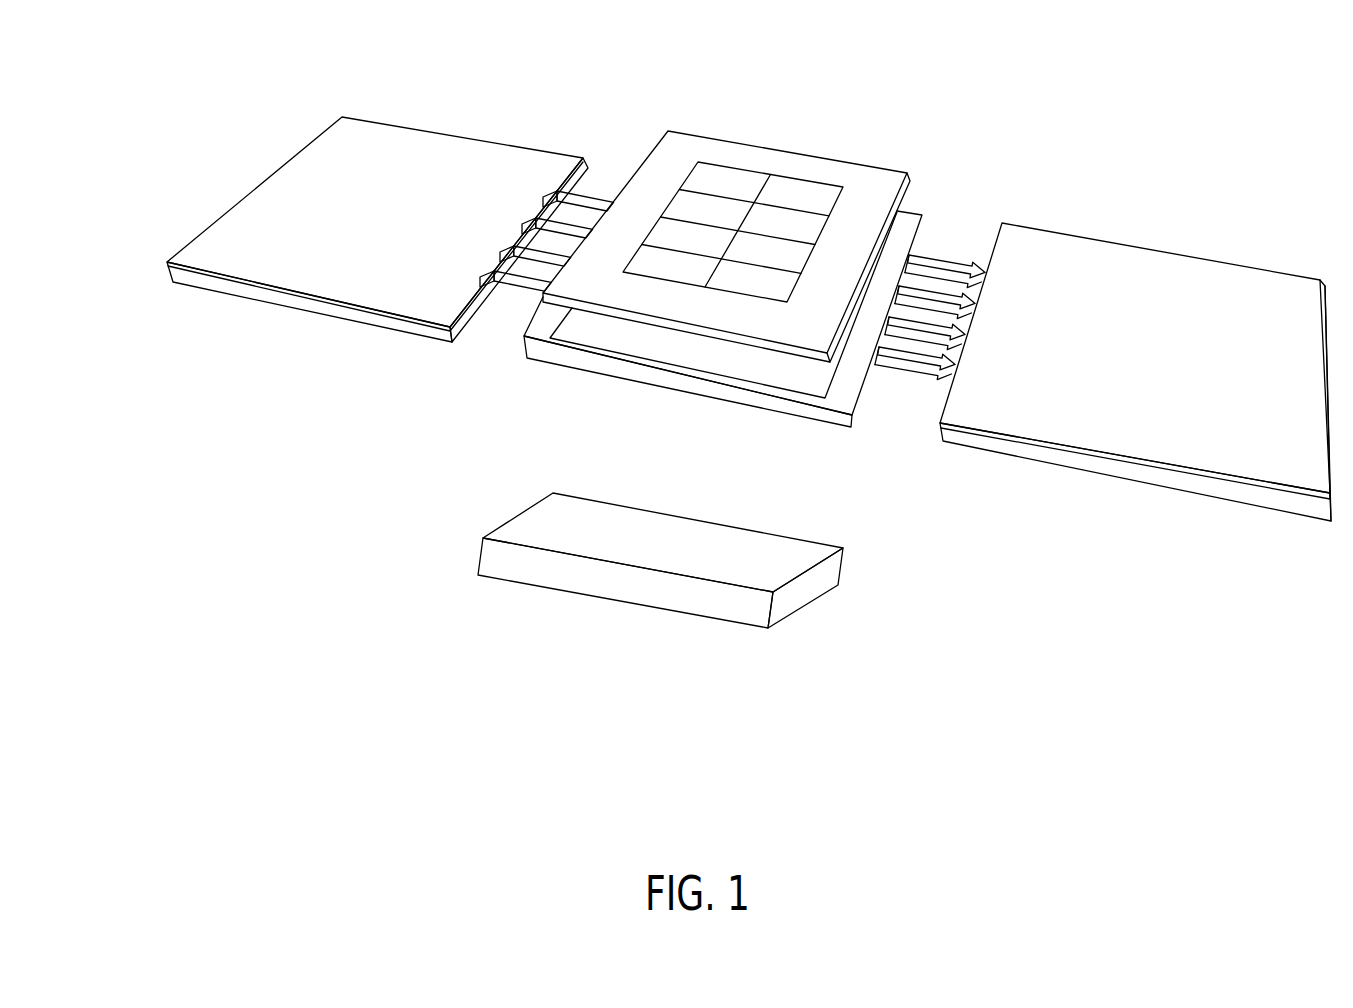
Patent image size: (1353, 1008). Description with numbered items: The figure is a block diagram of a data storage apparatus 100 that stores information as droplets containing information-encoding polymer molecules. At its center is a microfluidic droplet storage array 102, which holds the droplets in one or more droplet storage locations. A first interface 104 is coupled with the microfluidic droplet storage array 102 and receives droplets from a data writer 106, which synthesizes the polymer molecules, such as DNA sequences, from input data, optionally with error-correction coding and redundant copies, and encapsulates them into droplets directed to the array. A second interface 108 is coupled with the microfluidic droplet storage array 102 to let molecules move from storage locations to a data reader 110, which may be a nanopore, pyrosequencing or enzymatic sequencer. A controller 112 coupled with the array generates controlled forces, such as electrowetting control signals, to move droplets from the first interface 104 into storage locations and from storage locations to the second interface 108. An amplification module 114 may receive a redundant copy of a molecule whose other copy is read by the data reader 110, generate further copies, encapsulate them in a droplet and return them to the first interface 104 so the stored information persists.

The data storage apparatus 100 is at (840, 68).
The microfluidic droplet storage array 102 is at (718, 136).
The first interface 104 is at (606, 170).
The data writer 106 is at (327, 317).
The second interface 108 is at (954, 226).
The data reader 110 is at (1127, 475).
The controller 112 is at (703, 393).
The amplification module 114 is at (522, 583).